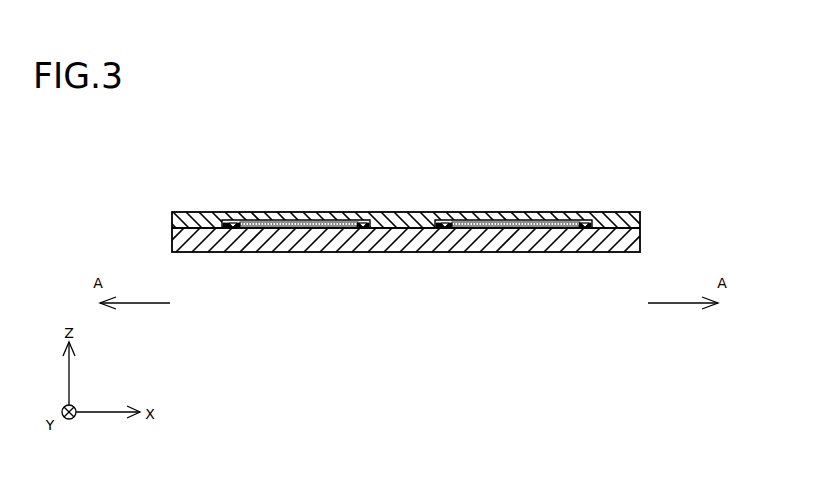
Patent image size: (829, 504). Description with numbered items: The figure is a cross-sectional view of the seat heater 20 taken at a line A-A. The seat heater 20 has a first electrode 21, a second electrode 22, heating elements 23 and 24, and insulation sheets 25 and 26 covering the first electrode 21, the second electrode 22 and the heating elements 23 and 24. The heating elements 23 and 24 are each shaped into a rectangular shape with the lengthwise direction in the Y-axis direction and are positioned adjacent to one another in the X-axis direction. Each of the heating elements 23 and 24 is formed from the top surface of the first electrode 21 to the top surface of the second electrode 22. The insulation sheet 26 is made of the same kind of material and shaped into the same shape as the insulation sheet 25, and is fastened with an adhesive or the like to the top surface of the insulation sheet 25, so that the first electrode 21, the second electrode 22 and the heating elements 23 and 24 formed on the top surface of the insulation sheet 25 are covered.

The seat heater 20 is at (410, 189).
The first electrode 21 is at (469, 255).
The second electrode 22 is at (328, 255).
The heating element 23 is at (516, 194).
The heating element 24 is at (299, 194).
The insulation sheet 25 is at (431, 242).
The insulation sheet 26 is at (431, 219).